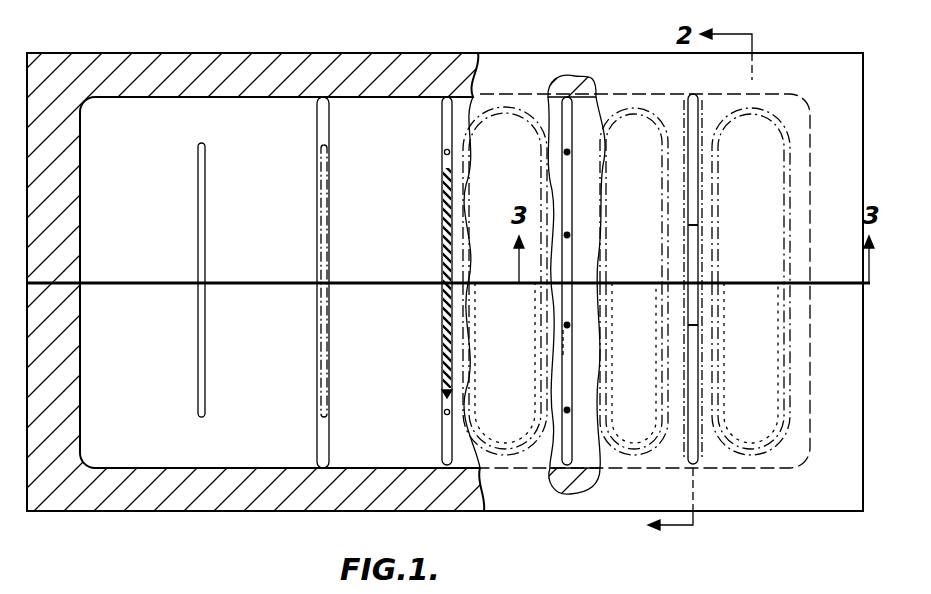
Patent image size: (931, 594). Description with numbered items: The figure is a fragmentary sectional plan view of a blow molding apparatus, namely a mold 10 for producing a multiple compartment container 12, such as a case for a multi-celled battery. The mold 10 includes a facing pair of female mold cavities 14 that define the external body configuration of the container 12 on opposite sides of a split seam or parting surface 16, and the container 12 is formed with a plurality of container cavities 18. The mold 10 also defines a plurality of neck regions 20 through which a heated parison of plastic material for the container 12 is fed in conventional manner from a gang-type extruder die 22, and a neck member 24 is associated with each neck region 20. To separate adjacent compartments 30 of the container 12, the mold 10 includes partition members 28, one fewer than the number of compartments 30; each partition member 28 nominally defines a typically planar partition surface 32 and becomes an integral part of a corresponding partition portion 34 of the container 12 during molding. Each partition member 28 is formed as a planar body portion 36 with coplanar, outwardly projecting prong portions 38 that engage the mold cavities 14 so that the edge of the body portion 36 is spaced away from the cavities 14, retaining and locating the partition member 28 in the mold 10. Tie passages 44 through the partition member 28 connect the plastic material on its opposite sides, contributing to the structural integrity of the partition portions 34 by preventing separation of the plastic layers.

The mold 10 is at (232, 521).
The multiple compartment container 12 is at (507, 467).
The female mold cavities 14 is at (158, 97).
The split seam or parting surface 16 is at (118, 283).
The container cavities 18 is at (150, 362).
The neck regions 20 is at (520, 325).
The gang-type extruder die 22 is at (827, 578).
The neck member 24 is at (540, 398).
The partition member 28 is at (441, 377).
The compartments 30 is at (516, 181).
The partition surface 32 is at (693, 514).
The partition portions 34 is at (700, 228).
The planar body portion 36 is at (441, 130).
The prong portions 38 is at (441, 99).
The tie passages 44 is at (441, 232).